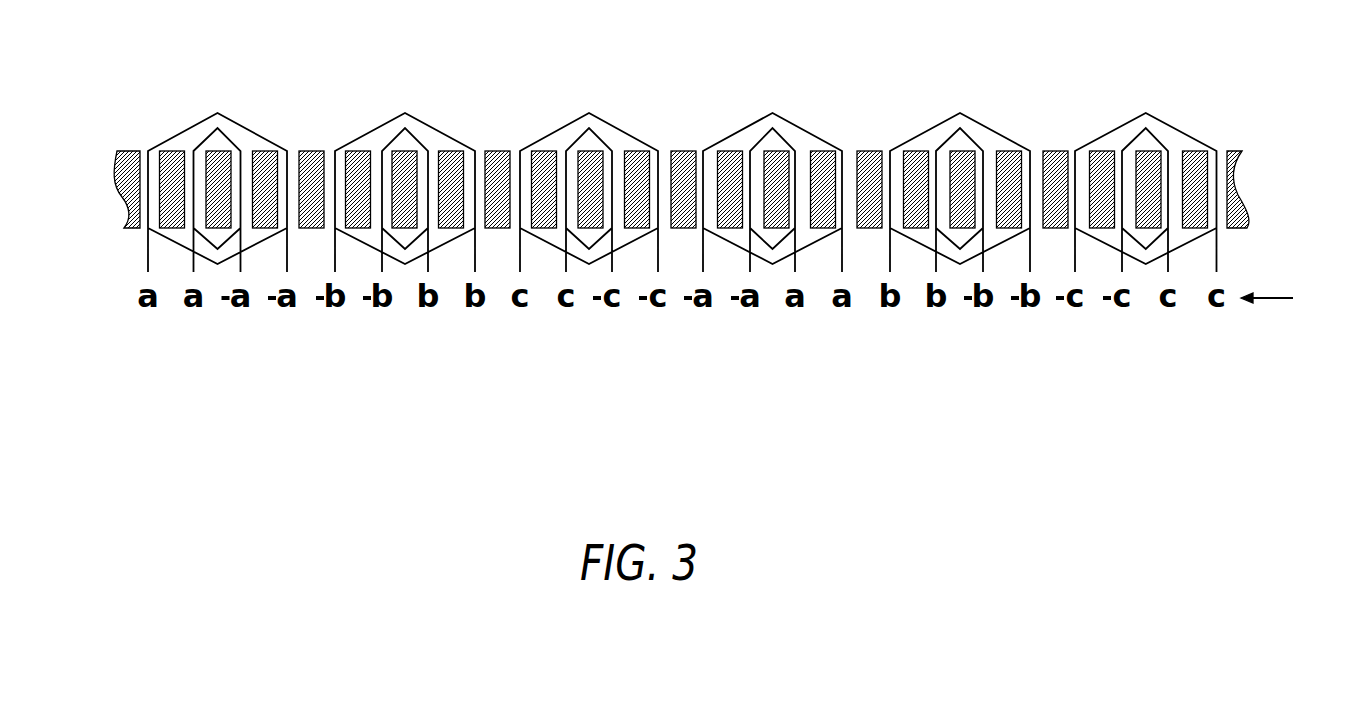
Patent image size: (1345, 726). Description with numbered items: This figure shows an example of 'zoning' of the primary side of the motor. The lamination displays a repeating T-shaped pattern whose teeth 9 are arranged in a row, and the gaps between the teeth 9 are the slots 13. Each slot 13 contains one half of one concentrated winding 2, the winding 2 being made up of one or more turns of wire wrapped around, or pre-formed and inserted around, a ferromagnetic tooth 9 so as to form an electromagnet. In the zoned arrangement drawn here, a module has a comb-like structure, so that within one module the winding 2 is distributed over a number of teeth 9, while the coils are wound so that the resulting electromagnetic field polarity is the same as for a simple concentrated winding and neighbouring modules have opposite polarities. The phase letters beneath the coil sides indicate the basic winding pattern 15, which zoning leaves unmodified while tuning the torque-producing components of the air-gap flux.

The concentrated winding 2 is at (228, 138).
The tooth 9 is at (496, 170).
The slot 13 is at (437, 157).
The winding pattern 15 is at (1282, 299).